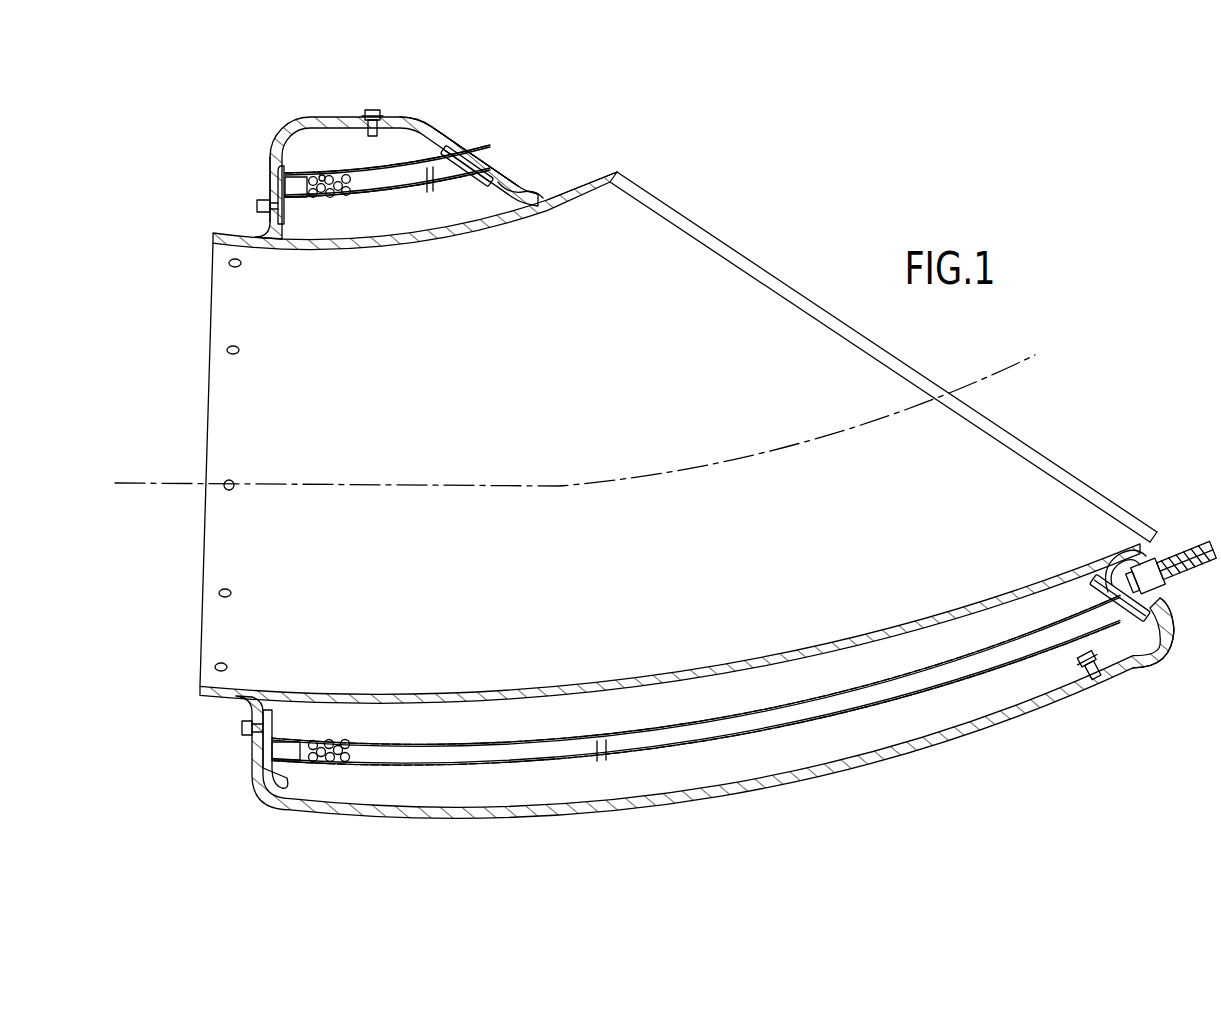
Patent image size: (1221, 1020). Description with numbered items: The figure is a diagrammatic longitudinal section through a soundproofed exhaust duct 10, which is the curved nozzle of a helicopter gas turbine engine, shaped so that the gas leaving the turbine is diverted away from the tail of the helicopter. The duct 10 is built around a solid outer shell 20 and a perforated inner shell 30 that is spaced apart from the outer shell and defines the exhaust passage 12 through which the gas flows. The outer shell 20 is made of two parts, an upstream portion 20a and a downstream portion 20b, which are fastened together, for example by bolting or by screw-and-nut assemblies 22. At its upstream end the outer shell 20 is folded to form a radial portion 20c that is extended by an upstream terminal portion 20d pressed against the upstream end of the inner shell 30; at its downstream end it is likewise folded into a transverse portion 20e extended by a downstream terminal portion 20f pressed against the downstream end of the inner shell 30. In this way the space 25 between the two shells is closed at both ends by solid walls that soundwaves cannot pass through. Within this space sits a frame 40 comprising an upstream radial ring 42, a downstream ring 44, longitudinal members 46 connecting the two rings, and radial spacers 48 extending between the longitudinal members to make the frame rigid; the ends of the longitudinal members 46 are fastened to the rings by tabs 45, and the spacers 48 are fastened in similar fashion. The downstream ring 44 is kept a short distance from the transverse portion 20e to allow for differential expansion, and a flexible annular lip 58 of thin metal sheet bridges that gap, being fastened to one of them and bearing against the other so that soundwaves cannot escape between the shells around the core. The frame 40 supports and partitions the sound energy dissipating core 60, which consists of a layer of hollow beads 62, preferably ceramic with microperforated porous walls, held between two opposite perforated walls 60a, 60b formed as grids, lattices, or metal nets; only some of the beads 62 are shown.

The soundproofed exhaust duct 10 is at (194, 366).
The exhaust passage 12 is at (471, 380).
The outer shell 20 is at (728, 793).
The upstream portion 20a is at (312, 116).
The downstream portion 20b is at (412, 116).
The radial portion 20c is at (272, 190).
The upstream terminal portion 20d is at (230, 233).
The transverse portion 20e is at (455, 143).
The downstream terminal portion 20f is at (598, 178).
The screw-and-nut assemblies 22 is at (372, 110).
The space 25 is at (322, 165).
The perforated inner shell 30 is at (845, 645).
The frame 40 is at (450, 740).
The radial ring 42 is at (288, 160).
The ring 44 is at (472, 158).
The tabs 45 is at (298, 197).
The longitudinal members 46 is at (428, 186).
The radial spacers 48 is at (598, 750).
The flexible annular lip 58 is at (520, 186).
The sound energy dissipating core 60 is at (368, 194).
The perforated wall 60a is at (470, 178).
The perforated wall 60b is at (398, 170).
The hollow beads 62 is at (322, 197).